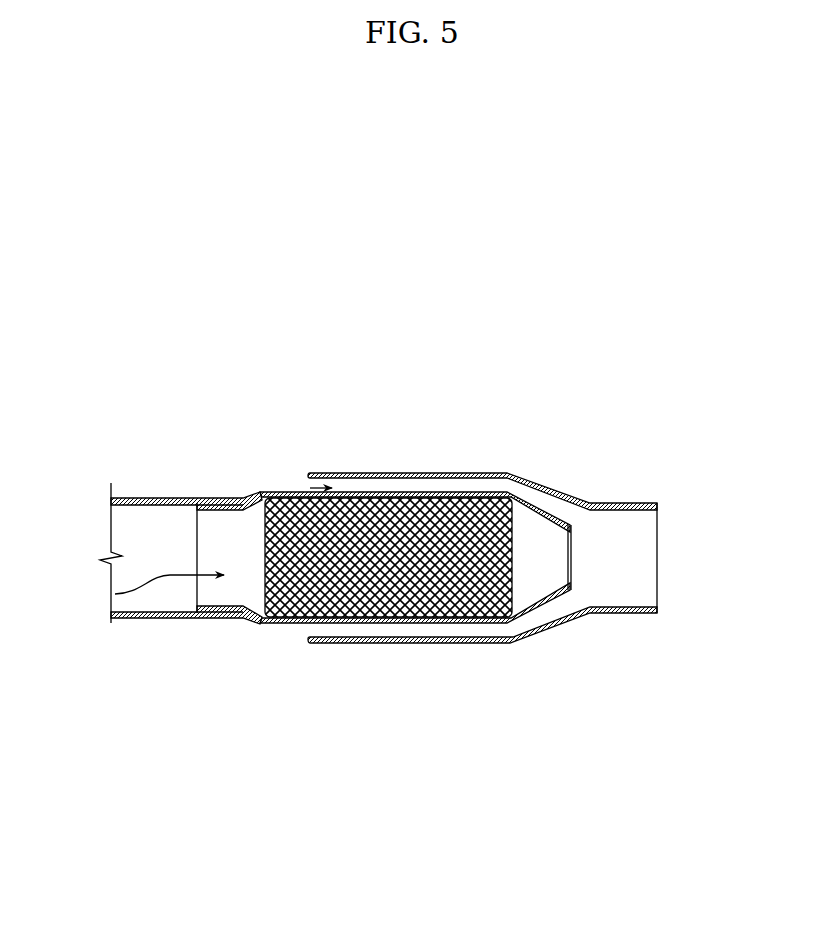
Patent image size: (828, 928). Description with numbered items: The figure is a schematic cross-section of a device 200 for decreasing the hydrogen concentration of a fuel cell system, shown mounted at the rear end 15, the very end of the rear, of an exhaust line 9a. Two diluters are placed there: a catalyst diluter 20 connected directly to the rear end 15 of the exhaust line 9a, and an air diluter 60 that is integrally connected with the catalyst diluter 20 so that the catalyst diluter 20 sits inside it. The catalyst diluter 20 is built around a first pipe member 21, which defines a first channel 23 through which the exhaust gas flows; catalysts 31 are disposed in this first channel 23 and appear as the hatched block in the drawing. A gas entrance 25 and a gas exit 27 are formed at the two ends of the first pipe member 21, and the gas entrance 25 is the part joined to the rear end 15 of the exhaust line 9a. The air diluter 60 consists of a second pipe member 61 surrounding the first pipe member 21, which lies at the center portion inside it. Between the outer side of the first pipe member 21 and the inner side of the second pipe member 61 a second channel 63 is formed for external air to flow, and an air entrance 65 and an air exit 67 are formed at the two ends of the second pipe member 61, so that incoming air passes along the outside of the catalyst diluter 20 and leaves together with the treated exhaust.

The device for decreasing hydrogen concentration 200 is at (423, 366).
The exhaust line 9a is at (139, 622).
The rear end 15 is at (215, 619).
The gas entrance 25 is at (204, 498).
The first channel 23 is at (115, 593).
The catalyst diluter 20 is at (264, 729).
The first pipe member 21 is at (270, 627).
The catalysts 31 is at (262, 570).
The gas exit 27 is at (562, 522).
The air diluter 60 is at (475, 558).
The second channel 63 is at (306, 491).
The second pipe member 61 is at (407, 644).
The air entrance 65 is at (305, 641).
The air exit 67 is at (657, 587).